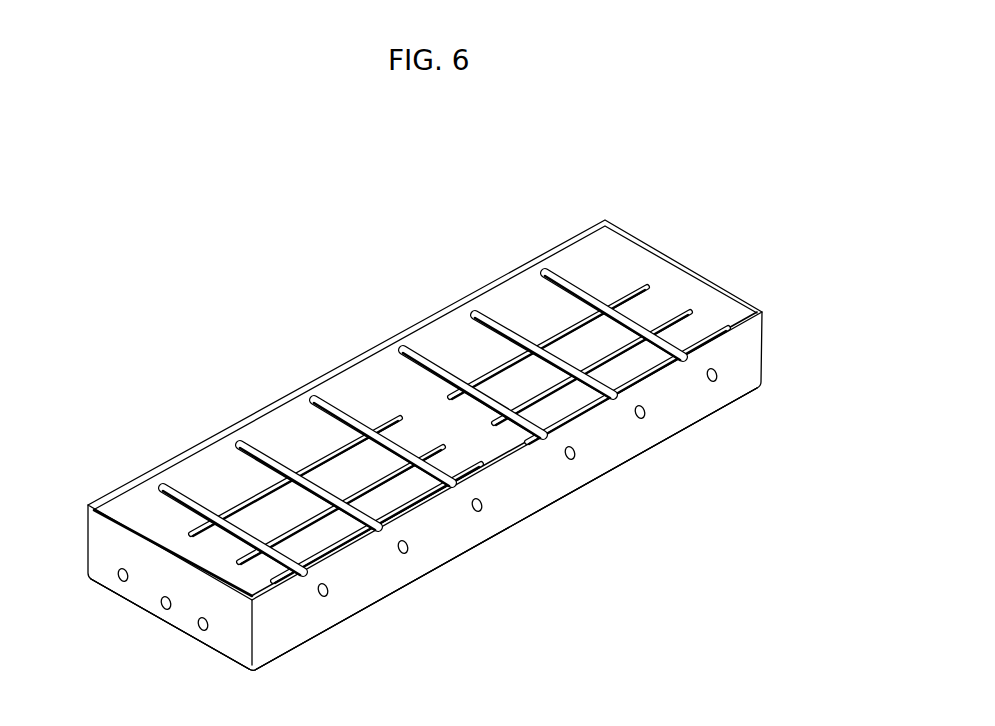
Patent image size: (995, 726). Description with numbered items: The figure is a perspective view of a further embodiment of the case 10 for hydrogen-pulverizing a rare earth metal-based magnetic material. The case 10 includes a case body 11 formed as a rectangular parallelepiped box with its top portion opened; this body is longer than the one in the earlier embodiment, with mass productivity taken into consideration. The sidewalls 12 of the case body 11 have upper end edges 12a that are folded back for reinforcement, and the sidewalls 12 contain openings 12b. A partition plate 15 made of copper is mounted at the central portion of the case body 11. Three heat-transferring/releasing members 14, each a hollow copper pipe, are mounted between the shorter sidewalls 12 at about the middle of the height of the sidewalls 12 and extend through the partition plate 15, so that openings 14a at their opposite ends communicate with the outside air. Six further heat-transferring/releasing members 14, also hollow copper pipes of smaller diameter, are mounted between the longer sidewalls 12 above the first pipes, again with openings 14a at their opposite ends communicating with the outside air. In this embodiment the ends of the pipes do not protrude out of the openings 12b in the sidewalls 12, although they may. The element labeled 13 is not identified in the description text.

The case 10 is at (539, 248).
The case body 11 is at (636, 234).
The sidewall 12 is at (262, 653).
The upper end edge 12a is at (123, 532).
The opening 12b is at (405, 526).
The side wall 13 is at (107, 517).
The heat-transferring/releasing member 14 is at (428, 365).
The opening 14a is at (199, 626).
The partition plate 15 is at (378, 374).